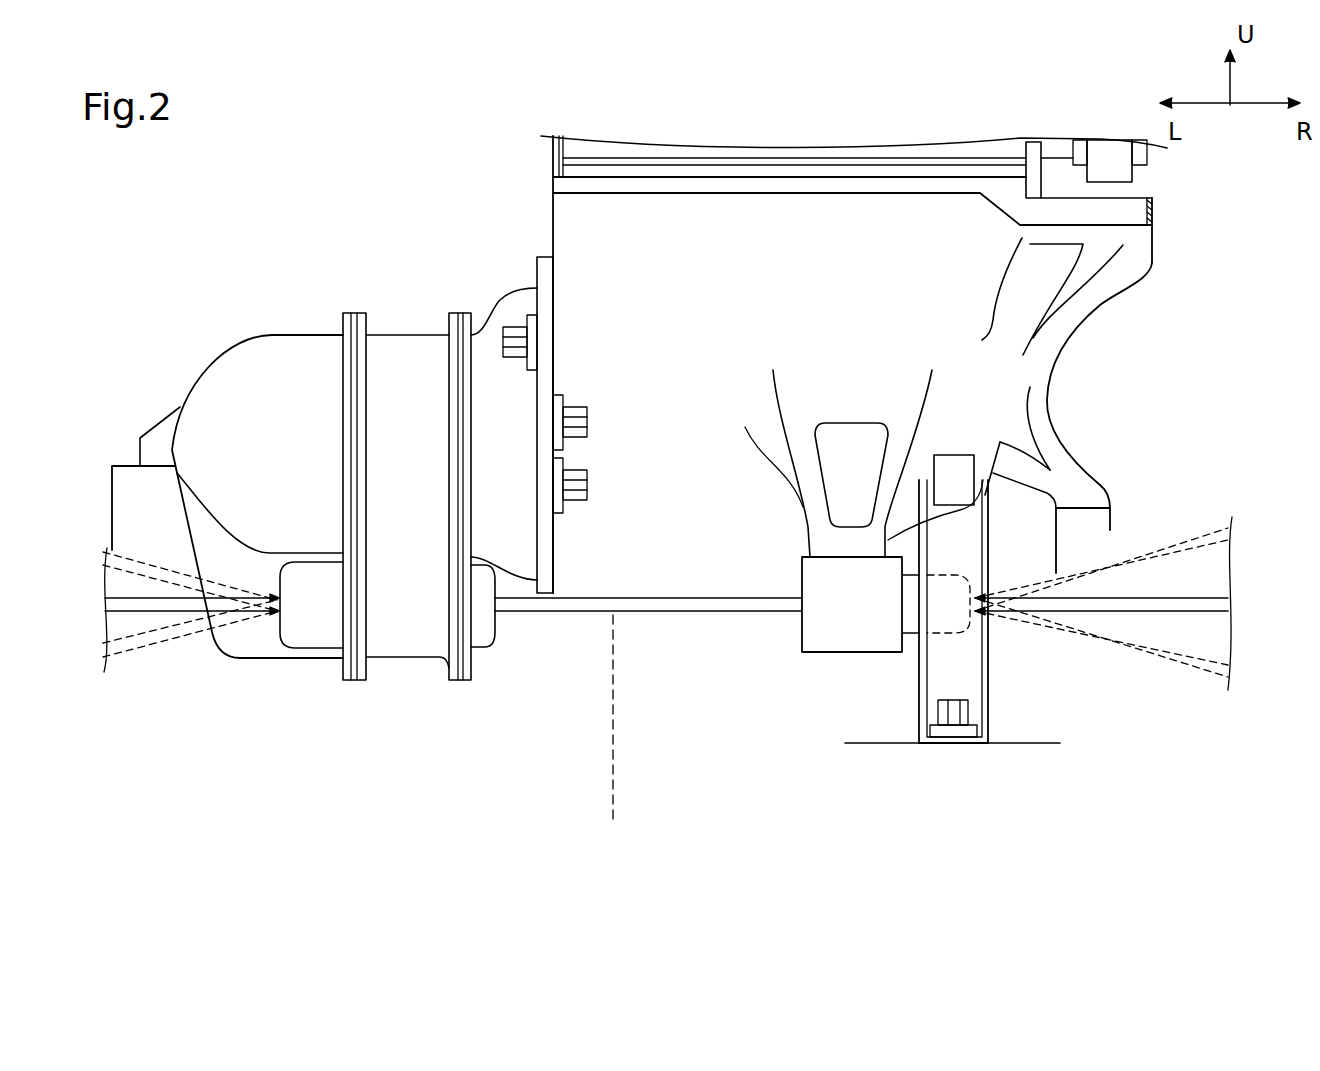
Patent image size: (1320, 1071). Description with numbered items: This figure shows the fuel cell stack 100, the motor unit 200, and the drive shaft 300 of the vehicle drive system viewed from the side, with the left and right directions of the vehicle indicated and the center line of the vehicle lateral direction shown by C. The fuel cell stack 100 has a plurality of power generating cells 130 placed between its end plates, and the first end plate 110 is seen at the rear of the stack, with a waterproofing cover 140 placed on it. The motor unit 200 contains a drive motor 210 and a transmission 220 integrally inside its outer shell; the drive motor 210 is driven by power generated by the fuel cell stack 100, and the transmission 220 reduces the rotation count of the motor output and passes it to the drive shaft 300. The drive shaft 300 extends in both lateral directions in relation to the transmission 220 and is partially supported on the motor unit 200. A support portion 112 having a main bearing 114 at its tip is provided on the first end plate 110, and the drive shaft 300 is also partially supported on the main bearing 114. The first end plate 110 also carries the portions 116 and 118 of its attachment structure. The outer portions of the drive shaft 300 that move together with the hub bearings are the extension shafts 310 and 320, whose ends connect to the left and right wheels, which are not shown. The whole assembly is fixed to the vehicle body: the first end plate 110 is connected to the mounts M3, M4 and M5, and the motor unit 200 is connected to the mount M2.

The fuel cell stack 100 is at (673, 147).
The power generating cells 130 is at (820, 176).
The waterproofing cover 140 is at (556, 230).
The first end plate 110 is at (786, 208).
The motor unit 200 is at (203, 365).
The drive motor 210 is at (300, 350).
The transmission 220 is at (405, 647).
The mount M2 is at (112, 488).
The extension shaft 310 is at (163, 605).
The drive shaft 300 is at (529, 715).
The center line C is at (613, 735).
The support portion 112 is at (797, 407).
The main bearing 114 is at (802, 633).
The mount M3 is at (952, 745).
The frame arm 116 is at (1045, 428).
The frame upper arm 118 is at (1113, 283).
The mount M4 is at (1112, 520).
The mount M5 is at (1132, 175).
The extension shaft 320 is at (1141, 600).